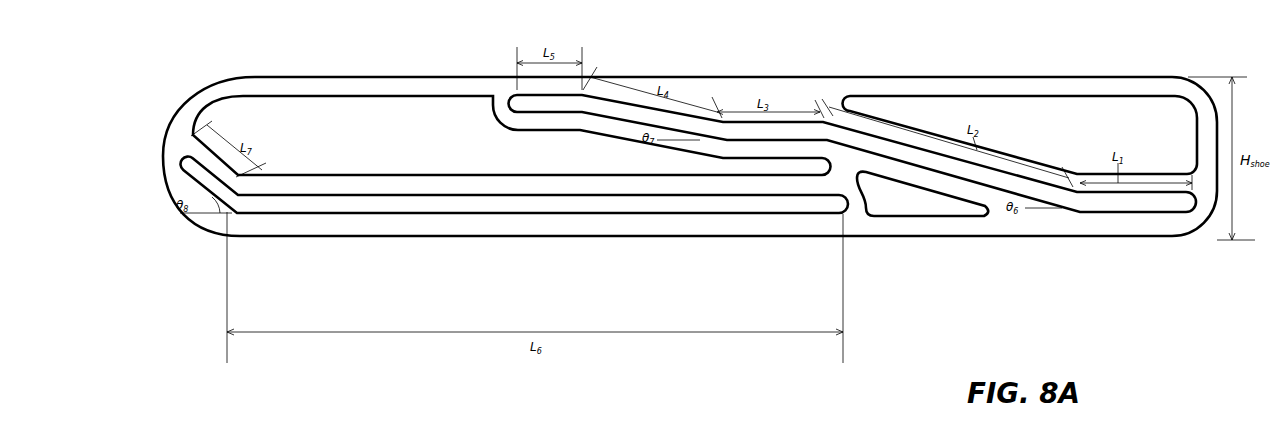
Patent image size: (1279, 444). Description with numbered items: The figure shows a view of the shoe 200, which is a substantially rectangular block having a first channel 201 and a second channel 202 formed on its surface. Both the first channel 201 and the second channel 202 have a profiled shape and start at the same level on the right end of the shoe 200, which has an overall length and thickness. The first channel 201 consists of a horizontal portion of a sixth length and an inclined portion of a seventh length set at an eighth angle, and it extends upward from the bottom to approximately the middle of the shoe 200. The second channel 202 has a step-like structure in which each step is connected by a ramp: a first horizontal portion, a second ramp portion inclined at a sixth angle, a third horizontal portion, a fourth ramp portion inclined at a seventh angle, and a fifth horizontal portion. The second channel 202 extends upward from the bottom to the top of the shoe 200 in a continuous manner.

The shoe 200 is at (1130, 67).
The first channel 201 is at (505, 203).
The second channel 202 is at (1153, 203).